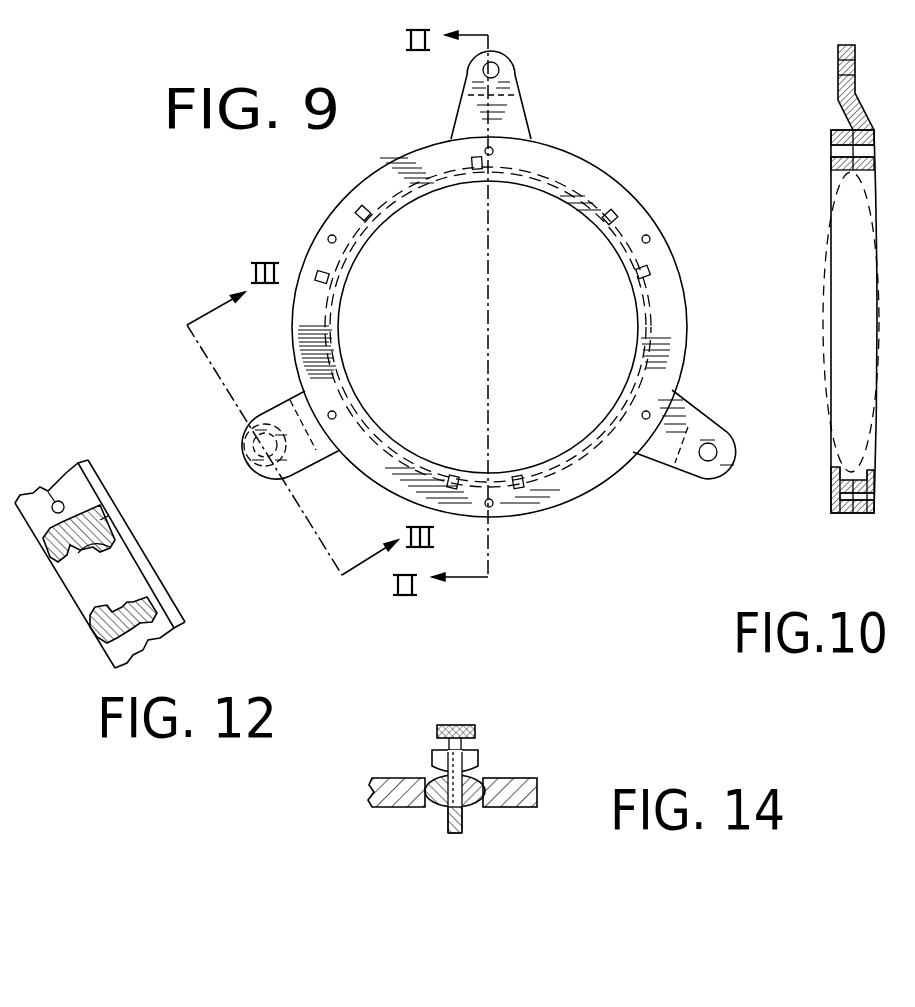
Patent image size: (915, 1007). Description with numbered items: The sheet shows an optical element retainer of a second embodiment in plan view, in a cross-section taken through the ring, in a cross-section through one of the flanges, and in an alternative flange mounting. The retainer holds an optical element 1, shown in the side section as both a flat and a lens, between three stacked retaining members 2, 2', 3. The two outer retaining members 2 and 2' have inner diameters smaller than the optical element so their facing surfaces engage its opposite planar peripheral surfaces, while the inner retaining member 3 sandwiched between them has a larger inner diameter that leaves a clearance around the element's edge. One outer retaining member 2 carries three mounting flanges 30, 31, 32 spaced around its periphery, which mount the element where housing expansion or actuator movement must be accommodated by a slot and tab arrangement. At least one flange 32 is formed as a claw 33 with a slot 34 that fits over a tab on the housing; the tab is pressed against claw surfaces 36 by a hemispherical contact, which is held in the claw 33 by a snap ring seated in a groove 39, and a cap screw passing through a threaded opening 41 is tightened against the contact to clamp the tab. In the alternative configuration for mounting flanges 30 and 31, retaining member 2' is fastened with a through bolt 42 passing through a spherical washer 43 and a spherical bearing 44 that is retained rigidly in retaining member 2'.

In FIG. 10, the optical element 1 is at (848, 229).
In FIG. 9, the retaining member 2 is at (503, 327).
In FIG. 10, the retaining member 2 is at (820, 350).
In FIG. 10, the retaining member 2' is at (853, 527).
In FIG. 14, the retaining member 2' is at (479, 805).
In FIG. 10, the retaining member 3 is at (848, 513).
In FIG. 9, the mounting flange 30 is at (508, 128).
In FIG. 10, the mounting flange 30 is at (840, 93).
In FIG. 9, the mounting flange 31 is at (688, 418).
In FIG. 9, the mounting flange 32 is at (318, 458).
In FIG. 12, the claw 33 is at (100, 637).
In FIG. 12, the slot 34 is at (110, 613).
In FIG. 12, the claw surfaces 36 is at (78, 553).
In FIG. 12, the groove 39 is at (133, 560).
In FIG. 12, the threaded opening 41 is at (110, 547).
In FIG. 14, the through bolt 42 is at (478, 730).
In FIG. 14, the spherical washer 43 is at (473, 758).
In FIG. 14, the spherical bearing 44 is at (437, 797).